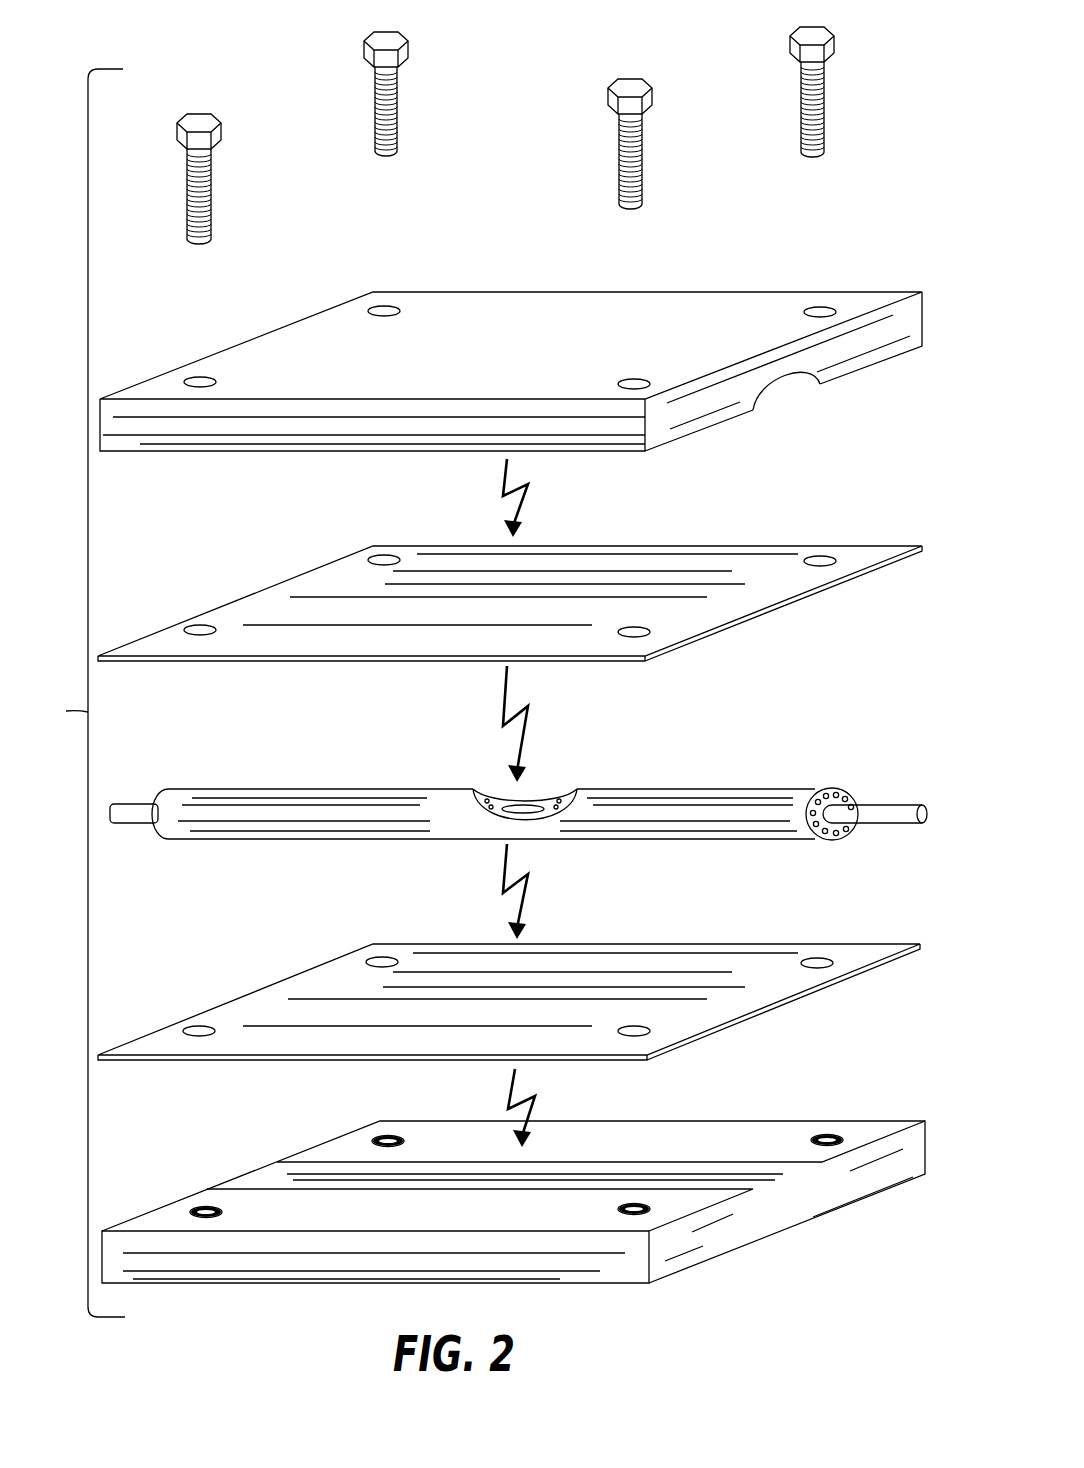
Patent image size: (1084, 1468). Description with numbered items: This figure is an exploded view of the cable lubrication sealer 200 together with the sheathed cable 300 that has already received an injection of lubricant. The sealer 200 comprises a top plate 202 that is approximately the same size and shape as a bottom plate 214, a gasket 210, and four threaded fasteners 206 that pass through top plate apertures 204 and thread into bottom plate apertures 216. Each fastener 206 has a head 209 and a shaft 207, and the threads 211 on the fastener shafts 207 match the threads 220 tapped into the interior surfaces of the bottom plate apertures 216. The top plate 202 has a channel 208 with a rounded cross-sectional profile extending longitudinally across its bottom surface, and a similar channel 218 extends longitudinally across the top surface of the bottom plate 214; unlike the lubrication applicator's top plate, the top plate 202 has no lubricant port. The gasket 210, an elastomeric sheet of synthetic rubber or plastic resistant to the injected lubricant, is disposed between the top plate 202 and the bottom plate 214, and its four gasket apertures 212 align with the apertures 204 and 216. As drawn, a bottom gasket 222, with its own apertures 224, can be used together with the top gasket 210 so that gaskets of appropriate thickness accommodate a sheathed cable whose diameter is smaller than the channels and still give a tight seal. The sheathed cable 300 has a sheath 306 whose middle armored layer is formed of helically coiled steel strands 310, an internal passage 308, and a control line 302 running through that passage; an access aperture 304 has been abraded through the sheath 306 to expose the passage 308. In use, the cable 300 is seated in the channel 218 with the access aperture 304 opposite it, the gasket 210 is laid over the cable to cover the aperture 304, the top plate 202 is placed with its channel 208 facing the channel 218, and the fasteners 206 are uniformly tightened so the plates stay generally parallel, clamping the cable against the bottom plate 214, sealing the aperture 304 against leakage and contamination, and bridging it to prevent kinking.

The cable lubrication sealer 200 is at (85, 100).
The top plate 202 is at (858, 370).
The top plate apertures 204 is at (200, 378).
The threaded fasteners 206 is at (175, 158).
The fastener shafts 207 is at (203, 246).
The channel 208 is at (780, 382).
The bolt head 209 is at (221, 139).
The gasket 210 is at (608, 543).
The threads 211 is at (211, 170).
The gasket apertures 212 is at (382, 556).
The bottom plate 214 is at (807, 1220).
The bottom plate apertures 216 is at (386, 1148).
The channel 218 is at (753, 1190).
The threads 220 is at (388, 1137).
The bottom gasket 222 is at (638, 943).
The holes in lower thin plate 224 is at (382, 958).
The sheathed cable 300 is at (205, 862).
The control line 302 is at (134, 803).
The access aperture 304 is at (525, 806).
The sheath 306 is at (290, 841).
The internal passage 308 is at (833, 793).
The helically coiled steel strands 310 is at (820, 791).